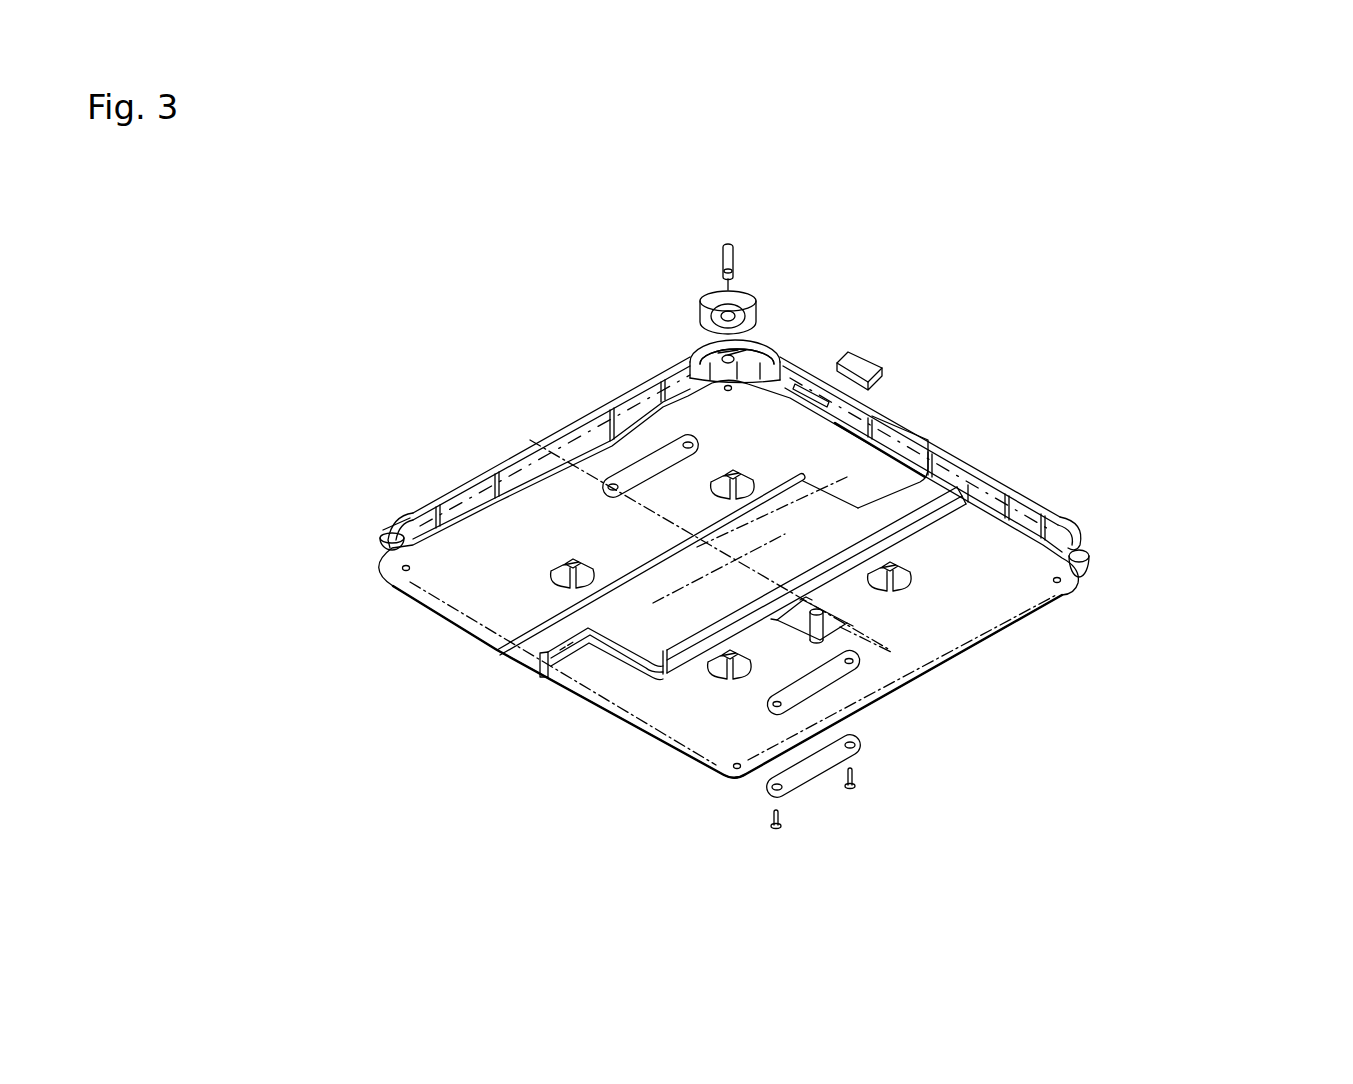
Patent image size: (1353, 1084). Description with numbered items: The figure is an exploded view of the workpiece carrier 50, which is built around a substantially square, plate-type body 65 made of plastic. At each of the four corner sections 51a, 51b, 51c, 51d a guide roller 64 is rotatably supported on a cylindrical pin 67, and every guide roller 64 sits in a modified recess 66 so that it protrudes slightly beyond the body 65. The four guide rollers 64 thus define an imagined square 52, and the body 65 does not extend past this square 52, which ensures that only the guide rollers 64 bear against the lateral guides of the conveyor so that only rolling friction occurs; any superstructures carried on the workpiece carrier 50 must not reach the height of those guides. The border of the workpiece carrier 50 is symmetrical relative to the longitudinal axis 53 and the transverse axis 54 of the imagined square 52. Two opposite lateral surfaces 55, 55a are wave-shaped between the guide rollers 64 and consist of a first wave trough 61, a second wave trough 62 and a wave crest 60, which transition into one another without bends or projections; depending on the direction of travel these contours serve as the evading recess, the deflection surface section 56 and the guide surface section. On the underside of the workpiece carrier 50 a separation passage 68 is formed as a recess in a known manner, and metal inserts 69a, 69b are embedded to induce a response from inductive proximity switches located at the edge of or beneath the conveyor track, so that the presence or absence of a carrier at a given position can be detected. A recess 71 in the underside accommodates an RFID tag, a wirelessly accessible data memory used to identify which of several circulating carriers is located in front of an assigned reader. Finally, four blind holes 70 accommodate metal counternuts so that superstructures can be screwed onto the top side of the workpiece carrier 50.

The workpiece carrier 50 is at (1206, 181).
The corner section 51a is at (760, 346).
The corner section 51b is at (1070, 542).
The corner section 51c is at (394, 523).
The corner section 51d is at (738, 773).
The imagined square 52 is at (610, 703).
The longitudinal axis 53 is at (867, 482).
The transverse axis 54 is at (876, 655).
The lateral surface 55 is at (848, 733).
The lateral surface 55a is at (560, 440).
The deflection surface section 56 is at (921, 454).
The wave crest 60 is at (553, 438).
The first wave trough 61 is at (640, 396).
The second wave trough 62 is at (460, 493).
The guide roller 64 is at (703, 307).
The plate-type body 65 is at (927, 627).
The modified recess 66 is at (705, 366).
The cylindrical pin 67 is at (723, 253).
The separation passage 68 is at (927, 488).
The metal insert 69a is at (860, 367).
The metal insert 69b is at (797, 770).
The blind hole 70 is at (553, 570).
The recess for RFID tag 71 is at (806, 620).